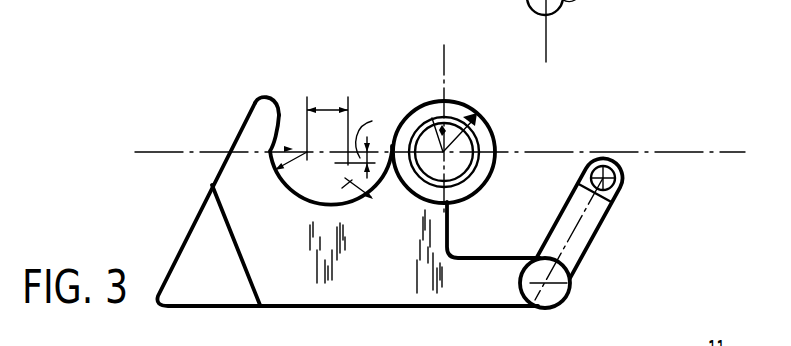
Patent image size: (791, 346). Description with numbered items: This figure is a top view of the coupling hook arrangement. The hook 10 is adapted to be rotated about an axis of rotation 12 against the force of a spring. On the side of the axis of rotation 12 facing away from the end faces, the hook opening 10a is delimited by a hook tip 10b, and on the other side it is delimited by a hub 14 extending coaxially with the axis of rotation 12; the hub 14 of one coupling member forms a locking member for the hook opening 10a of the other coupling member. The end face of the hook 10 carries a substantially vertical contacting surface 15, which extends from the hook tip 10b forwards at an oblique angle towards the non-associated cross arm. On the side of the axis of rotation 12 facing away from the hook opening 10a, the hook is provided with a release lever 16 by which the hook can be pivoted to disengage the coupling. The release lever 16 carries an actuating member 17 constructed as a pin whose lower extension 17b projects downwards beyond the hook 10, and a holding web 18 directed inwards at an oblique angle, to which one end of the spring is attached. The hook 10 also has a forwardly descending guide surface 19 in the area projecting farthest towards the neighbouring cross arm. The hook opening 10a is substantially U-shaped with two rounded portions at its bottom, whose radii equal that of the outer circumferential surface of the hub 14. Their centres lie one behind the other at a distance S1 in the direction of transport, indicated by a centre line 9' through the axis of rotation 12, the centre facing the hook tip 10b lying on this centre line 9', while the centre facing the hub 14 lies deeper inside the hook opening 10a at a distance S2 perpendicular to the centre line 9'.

The centre line 9' is at (440, 100).
The hook 10 is at (351, 261).
The hook opening 10a is at (293, 95).
The hook tip 10b is at (266, 109).
The axis of rotation 12 is at (432, 118).
The hub 14 is at (418, 120).
The contacting surface 15 is at (170, 236).
The release lever 16 is at (492, 282).
The actuating member 17 is at (568, 296).
The lower extension 17b is at (613, 0).
The holding web 18 is at (588, 228).
The guide surface 19 is at (223, 261).
The distance s1 S1 is at (311, 122).
The distance s2 S2 is at (365, 155).